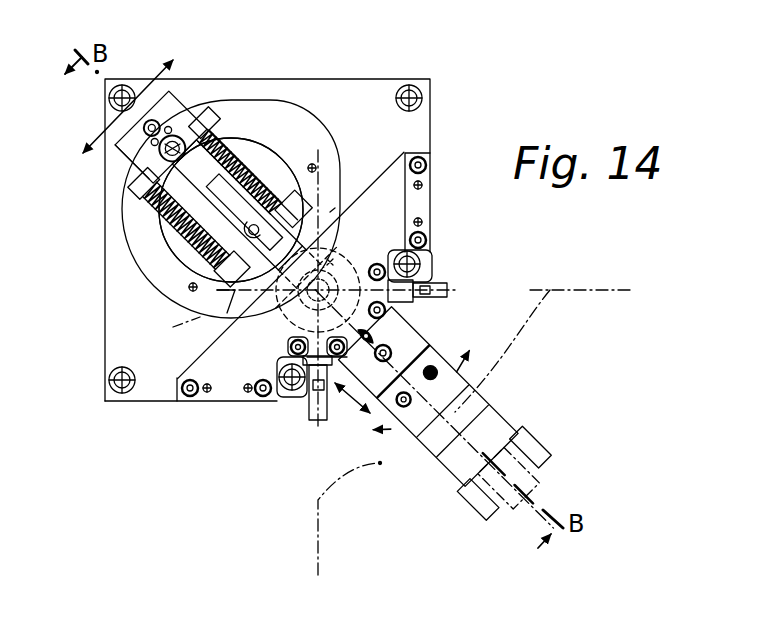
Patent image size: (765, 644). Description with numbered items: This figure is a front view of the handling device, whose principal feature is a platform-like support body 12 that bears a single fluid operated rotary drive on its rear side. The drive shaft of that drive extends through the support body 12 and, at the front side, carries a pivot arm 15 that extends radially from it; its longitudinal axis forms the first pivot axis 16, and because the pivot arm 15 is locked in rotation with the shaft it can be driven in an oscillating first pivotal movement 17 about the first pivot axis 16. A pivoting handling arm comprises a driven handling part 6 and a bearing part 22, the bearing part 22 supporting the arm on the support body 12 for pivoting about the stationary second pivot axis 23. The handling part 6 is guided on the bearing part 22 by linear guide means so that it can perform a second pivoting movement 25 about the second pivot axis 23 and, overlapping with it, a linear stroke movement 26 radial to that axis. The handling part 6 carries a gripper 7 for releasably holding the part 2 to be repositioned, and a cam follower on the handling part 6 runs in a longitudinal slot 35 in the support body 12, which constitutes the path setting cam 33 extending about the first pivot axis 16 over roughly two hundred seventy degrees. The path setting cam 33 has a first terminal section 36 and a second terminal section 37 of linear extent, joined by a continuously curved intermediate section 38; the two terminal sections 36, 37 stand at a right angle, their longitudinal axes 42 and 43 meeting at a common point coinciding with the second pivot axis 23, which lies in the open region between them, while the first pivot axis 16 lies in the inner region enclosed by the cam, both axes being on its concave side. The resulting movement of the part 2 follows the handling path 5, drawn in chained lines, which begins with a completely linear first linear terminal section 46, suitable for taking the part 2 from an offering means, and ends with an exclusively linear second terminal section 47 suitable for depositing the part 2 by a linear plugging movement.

The part 2 is at (553, 472).
The handling path 5 is at (380, 465).
The handling part 6 is at (410, 337).
The gripper 7 is at (497, 423).
The support body 12 is at (348, 100).
The pivot arm 15 is at (133, 173).
The first pivot axis 16 is at (282, 196).
The first pivotal movement 17 is at (142, 78).
The bearing part 22 is at (257, 266).
The second pivot axis 23 is at (350, 262).
The second pivoting movement 25 is at (417, 418).
The linear stroke movement 26 is at (355, 415).
The path setting cam 33 is at (255, 110).
The longitudinal slot 35 is at (231, 210).
The first terminal section 36 is at (330, 212).
The second terminal section 37 is at (236, 293).
The intermediate section 38 is at (233, 106).
The longitudinal axis 42 is at (330, 153).
The longitudinal axis 43 is at (190, 313).
The first linear terminal section 46 is at (316, 528).
The second terminal section 47 is at (590, 292).